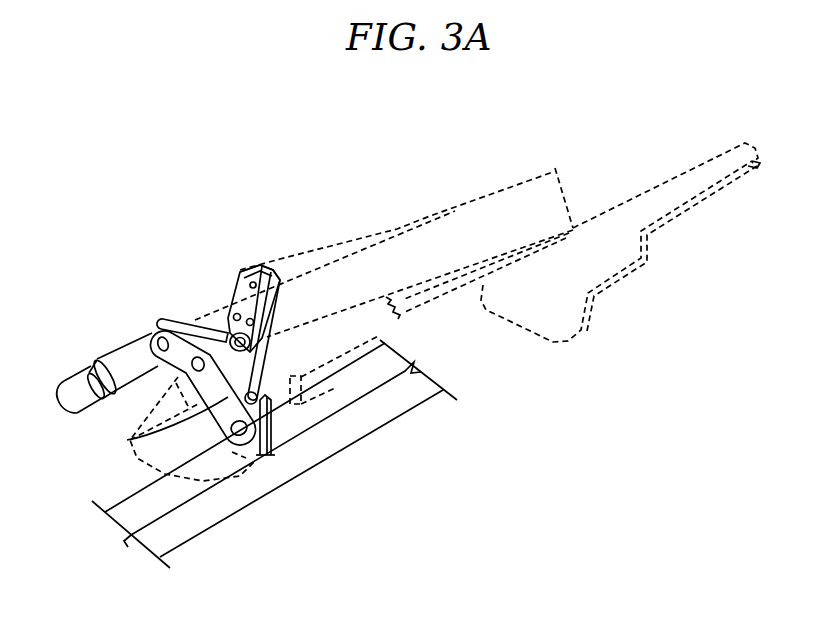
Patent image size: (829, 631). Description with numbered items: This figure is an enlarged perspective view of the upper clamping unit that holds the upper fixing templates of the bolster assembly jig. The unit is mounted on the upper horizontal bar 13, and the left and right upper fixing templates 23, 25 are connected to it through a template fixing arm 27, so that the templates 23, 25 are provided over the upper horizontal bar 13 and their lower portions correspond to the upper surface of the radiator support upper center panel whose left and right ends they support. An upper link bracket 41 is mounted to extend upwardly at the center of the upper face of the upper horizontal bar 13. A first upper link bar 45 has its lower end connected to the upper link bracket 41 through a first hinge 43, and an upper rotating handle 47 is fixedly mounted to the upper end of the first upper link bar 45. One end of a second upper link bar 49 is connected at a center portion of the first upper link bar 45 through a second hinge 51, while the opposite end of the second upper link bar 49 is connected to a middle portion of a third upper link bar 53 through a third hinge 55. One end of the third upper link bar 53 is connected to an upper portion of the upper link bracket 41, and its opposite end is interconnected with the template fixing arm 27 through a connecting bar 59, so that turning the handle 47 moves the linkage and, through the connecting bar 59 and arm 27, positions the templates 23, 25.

The upper horizontal bar 13 is at (216, 520).
The left upper fixing template 23 is at (392, 322).
The right upper fixing template 25 is at (687, 207).
The template fixing arm 27 is at (400, 240).
The upper link bracket 41 is at (272, 440).
The first hinge 43 is at (245, 450).
The first upper link bar 45 is at (127, 440).
The upper rotating handle 47 is at (107, 357).
The second upper link bar 49 is at (197, 322).
The second hinge 51 is at (160, 330).
The third upper link bar 53 is at (268, 326).
The third hinge 55 is at (228, 323).
The connecting bar 59 is at (238, 274).